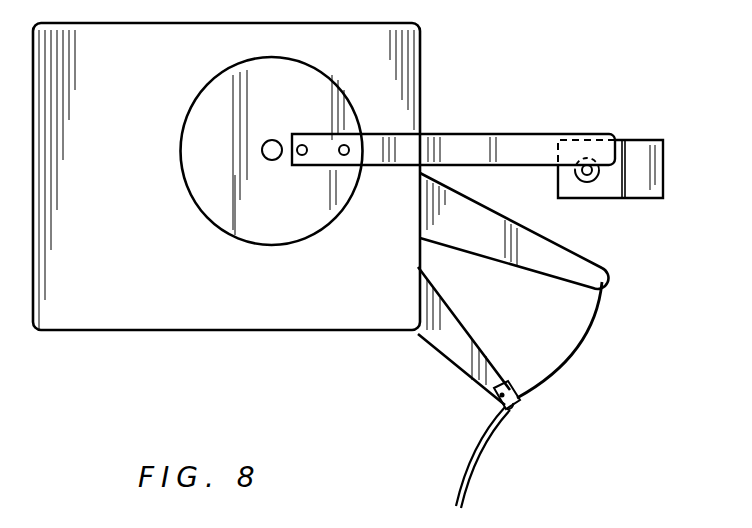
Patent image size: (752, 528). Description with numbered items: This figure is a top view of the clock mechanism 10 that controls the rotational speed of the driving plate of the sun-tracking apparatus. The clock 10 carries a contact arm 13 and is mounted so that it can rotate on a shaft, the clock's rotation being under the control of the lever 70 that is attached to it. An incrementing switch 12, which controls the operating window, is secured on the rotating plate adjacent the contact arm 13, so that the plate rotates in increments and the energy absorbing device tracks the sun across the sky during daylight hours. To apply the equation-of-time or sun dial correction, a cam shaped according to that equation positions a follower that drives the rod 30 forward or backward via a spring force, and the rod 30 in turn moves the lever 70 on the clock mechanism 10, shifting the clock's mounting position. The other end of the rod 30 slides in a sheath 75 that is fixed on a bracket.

The clock mechanism 10 is at (190, 325).
The incrementing switch 12 is at (657, 188).
The contact arm 13 is at (597, 178).
The cam follower rod 30 is at (560, 368).
The lever arm 70 is at (532, 262).
The sheath 75 is at (493, 440).